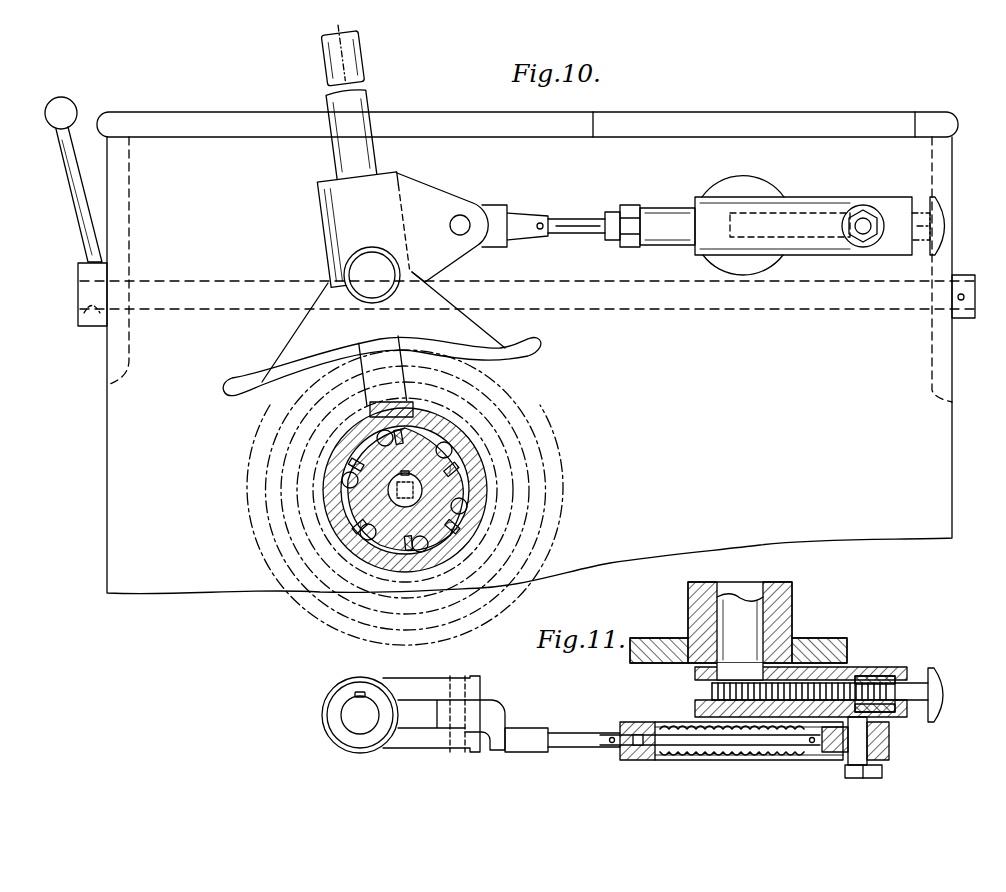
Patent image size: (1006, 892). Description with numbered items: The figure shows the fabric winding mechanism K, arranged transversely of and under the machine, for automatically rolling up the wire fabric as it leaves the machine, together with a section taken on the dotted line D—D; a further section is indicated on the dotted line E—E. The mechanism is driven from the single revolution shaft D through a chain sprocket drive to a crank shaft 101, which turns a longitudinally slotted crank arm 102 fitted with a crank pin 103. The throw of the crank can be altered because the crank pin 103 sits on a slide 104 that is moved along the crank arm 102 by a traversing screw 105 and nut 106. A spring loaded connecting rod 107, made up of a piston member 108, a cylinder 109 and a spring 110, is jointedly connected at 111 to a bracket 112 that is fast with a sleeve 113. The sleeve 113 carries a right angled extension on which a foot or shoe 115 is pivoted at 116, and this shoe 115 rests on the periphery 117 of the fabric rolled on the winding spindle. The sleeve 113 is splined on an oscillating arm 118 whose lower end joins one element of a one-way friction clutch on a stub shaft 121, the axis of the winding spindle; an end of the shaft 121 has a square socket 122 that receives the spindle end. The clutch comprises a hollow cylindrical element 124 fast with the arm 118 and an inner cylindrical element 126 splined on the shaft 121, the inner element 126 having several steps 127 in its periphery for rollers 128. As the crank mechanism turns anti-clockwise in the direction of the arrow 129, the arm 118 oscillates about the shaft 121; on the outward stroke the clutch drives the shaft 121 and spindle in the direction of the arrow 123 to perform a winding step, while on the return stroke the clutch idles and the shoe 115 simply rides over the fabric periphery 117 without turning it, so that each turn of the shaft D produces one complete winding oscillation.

In FIG. 11, the crank shaft 101 is at (738, 622).
In FIG. 10, the crank arm 102 is at (808, 205).
In FIG. 11, the crank arm 102 is at (866, 680).
In FIG. 10, the crank pin 103 is at (873, 218).
In FIG. 11, the crank pin 103 is at (855, 745).
In FIG. 10, the slide 104 is at (928, 226).
In FIG. 11, the slide 104 is at (905, 683).
In FIG. 11, the traversing screw 105 is at (775, 700).
In FIG. 11, the nut 106 is at (815, 690).
In FIG. 10, the spring loaded connecting rod 107 is at (673, 235).
In FIG. 11, the spring loaded connecting rod 107 is at (756, 767).
In FIG. 10, the piston member 108 is at (571, 219).
In FIG. 11, the piston member 108 is at (668, 735).
In FIG. 11, the cylinder 109 is at (673, 760).
In FIG. 11, the spring 110 is at (778, 758).
In FIG. 10, the joint 111 is at (466, 214).
In FIG. 11, the joint 111 is at (478, 700).
In FIG. 10, the bracket 112 is at (433, 195).
In FIG. 11, the bracket 112 is at (428, 682).
In FIG. 10, the sleeve 113 is at (363, 230).
In FIG. 11, the sleeve 113 is at (350, 685).
In FIG. 10, the foot or shoe 115 is at (383, 327).
In FIG. 10, the pivot 116 is at (372, 275).
In FIG. 10, the periphery of the fabric 117 is at (512, 402).
In FIG. 10, the oscillating arm 118 is at (345, 160).
In FIG. 11, the oscillating arm 118 is at (361, 713).
In FIG. 10, the stub shaft 121 is at (430, 492).
In FIG. 10, the square socket 122 is at (405, 489).
In FIG. 10, the arrow 123 is at (254, 417).
In FIG. 10, the hollow cylindrical element 124 is at (470, 447).
In FIG. 10, the inner cylindrical element 126 is at (488, 530).
In FIG. 10, the steps 127 is at (468, 596).
In FIG. 10, the rollers 128 is at (378, 410).
In FIG. 10, the arrow 129 is at (853, 185).
In FIG. 10, the single revolution shaft D is at (332, 219).
In FIG. 10, the dotted line E— E is at (328, 60).
In FIG. 11, the fabric winding mechanism K is at (562, 727).